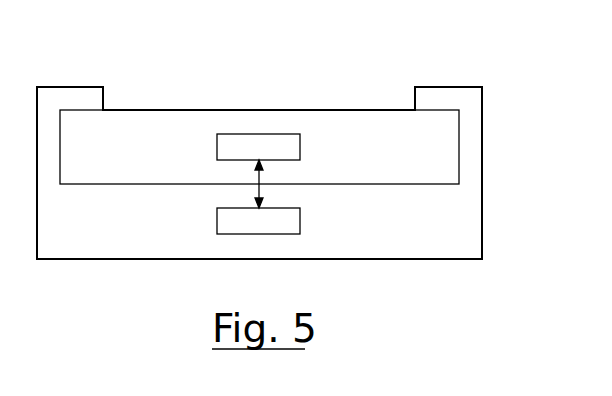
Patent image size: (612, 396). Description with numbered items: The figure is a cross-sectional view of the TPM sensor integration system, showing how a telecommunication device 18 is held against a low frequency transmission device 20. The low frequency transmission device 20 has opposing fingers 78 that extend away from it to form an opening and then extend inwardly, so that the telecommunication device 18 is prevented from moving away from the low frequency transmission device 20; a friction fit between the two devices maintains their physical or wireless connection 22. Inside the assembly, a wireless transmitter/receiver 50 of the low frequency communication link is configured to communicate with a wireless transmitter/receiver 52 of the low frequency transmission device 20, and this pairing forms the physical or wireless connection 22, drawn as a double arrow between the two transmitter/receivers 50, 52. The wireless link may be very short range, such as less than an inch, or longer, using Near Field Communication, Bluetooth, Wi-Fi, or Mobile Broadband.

The telecommunication device 18 is at (391, 184).
The low frequency transmission device 20 is at (476, 229).
The physical or wireless connection 22 is at (262, 188).
The wireless transmitter/receiver 50 is at (217, 146).
The wireless transmitter/receiver 52 is at (217, 220).
The opposing fingers 78 is at (82, 92).